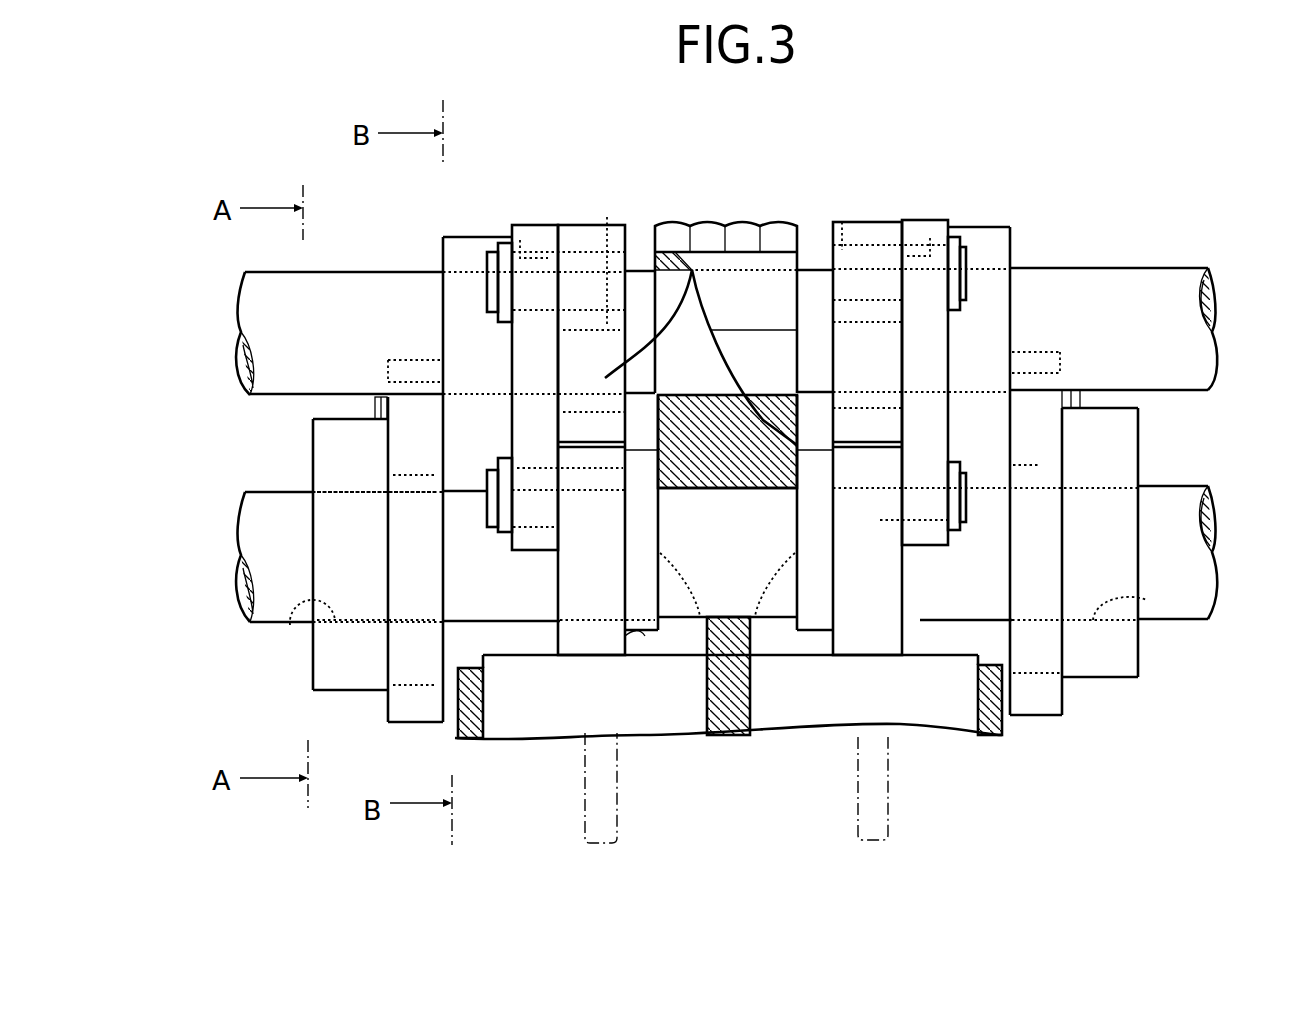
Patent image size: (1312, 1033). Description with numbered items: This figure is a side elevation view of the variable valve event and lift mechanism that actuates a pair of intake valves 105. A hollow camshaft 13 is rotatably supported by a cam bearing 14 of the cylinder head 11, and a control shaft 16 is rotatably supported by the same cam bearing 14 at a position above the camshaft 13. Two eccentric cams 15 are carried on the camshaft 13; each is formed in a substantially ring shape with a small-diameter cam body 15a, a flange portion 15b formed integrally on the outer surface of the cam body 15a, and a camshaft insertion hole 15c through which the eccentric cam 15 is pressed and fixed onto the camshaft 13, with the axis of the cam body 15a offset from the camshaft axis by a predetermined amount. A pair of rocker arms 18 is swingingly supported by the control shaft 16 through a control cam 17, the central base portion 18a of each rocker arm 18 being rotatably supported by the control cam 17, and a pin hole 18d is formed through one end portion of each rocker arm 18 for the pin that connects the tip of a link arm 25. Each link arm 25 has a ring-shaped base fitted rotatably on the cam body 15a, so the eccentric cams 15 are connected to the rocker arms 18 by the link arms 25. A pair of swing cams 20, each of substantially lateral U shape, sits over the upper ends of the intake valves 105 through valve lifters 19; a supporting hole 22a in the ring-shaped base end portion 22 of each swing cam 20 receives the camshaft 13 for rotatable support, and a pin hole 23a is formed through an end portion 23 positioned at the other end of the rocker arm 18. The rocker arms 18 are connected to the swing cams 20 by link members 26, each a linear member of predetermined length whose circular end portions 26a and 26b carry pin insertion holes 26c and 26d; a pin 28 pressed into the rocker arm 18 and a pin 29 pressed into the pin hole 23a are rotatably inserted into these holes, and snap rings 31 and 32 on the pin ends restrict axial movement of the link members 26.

The cylinder head 11 is at (985, 732).
The camshaft 13 is at (1187, 570).
The cam bearing 14 is at (790, 221).
The eccentric cam 15 is at (352, 692).
The cam body 15a is at (415, 670).
The flange portion 15b is at (320, 675).
The camshaft insertion hole 15c is at (290, 625).
The control shaft 16 is at (337, 297).
The control cam 17 is at (625, 237).
The rocker arm 18 is at (585, 225).
The base portion 18a is at (847, 368).
The pin hole 18d is at (607, 212).
The valve lifter 19 is at (660, 737).
The swing cam 20 is at (638, 594).
The base end portion 22 is at (647, 512).
The supporting hole 22a is at (545, 620).
The end portion 23 is at (603, 610).
The pin hole 23a is at (583, 520).
The link arm 25 is at (395, 705).
The link member 26 is at (510, 345).
The end portion 26a is at (537, 224).
The end portion 26b is at (530, 553).
The pin insertion hole 26c is at (518, 228).
The pin insertion hole 26d is at (500, 537).
The pin 28 is at (487, 253).
The pin 29 is at (487, 468).
The snap ring 31 is at (498, 245).
The snap ring 32 is at (505, 535).
The intake valve 105 is at (612, 825).